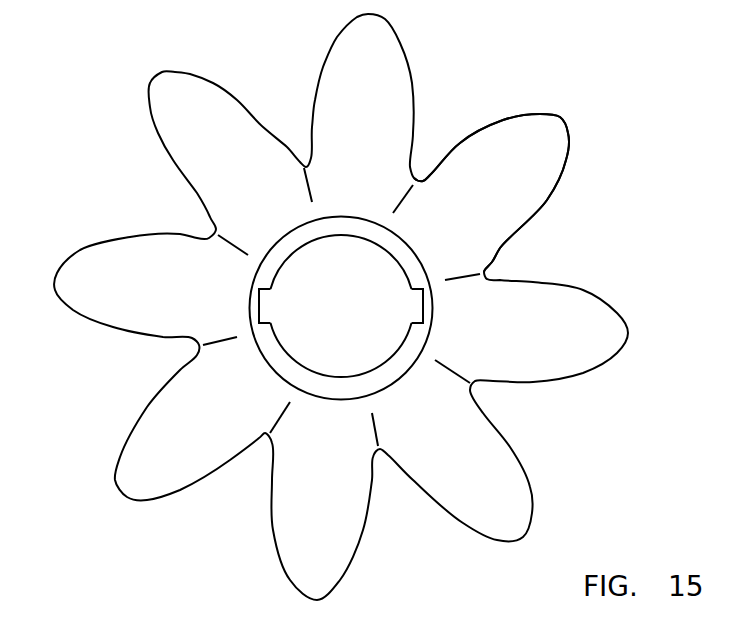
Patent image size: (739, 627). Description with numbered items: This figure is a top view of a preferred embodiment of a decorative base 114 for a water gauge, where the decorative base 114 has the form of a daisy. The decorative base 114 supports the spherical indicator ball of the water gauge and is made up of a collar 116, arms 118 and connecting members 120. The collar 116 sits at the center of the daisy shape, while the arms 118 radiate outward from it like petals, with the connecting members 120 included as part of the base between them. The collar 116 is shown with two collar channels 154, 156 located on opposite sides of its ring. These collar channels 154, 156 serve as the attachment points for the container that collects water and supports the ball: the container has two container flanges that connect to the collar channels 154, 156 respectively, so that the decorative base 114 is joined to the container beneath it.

The decorative base 114 is at (560, 178).
The collar 116 is at (270, 370).
The arms 118 is at (560, 117).
The connecting members 120 is at (473, 381).
The collar channel 154 is at (433, 312).
The collar channel 156 is at (250, 300).